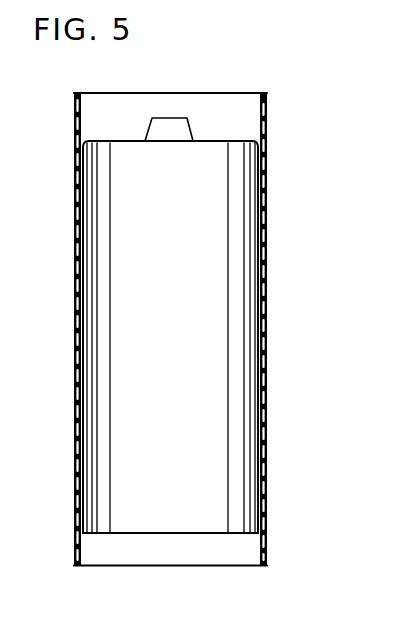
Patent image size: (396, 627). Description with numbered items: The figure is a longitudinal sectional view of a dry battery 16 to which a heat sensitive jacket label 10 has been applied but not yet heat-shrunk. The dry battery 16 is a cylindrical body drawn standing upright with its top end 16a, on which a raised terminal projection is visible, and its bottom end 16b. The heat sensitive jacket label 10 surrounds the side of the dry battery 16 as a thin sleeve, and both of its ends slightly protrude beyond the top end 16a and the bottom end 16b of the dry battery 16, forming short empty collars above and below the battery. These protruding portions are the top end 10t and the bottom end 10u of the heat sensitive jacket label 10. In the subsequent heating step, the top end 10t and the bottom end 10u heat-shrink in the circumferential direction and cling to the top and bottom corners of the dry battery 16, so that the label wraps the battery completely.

The heat sensitive jacket label 10 is at (266, 322).
The top end of the heat sensitive jacket label 10t is at (273, 93).
The bottom end of the heat sensitive jacket label 10u is at (273, 505).
The dry battery 16 is at (237, 400).
The top end of the dry battery 16a is at (203, 141).
The bottom end of the dry battery 16b is at (140, 533).